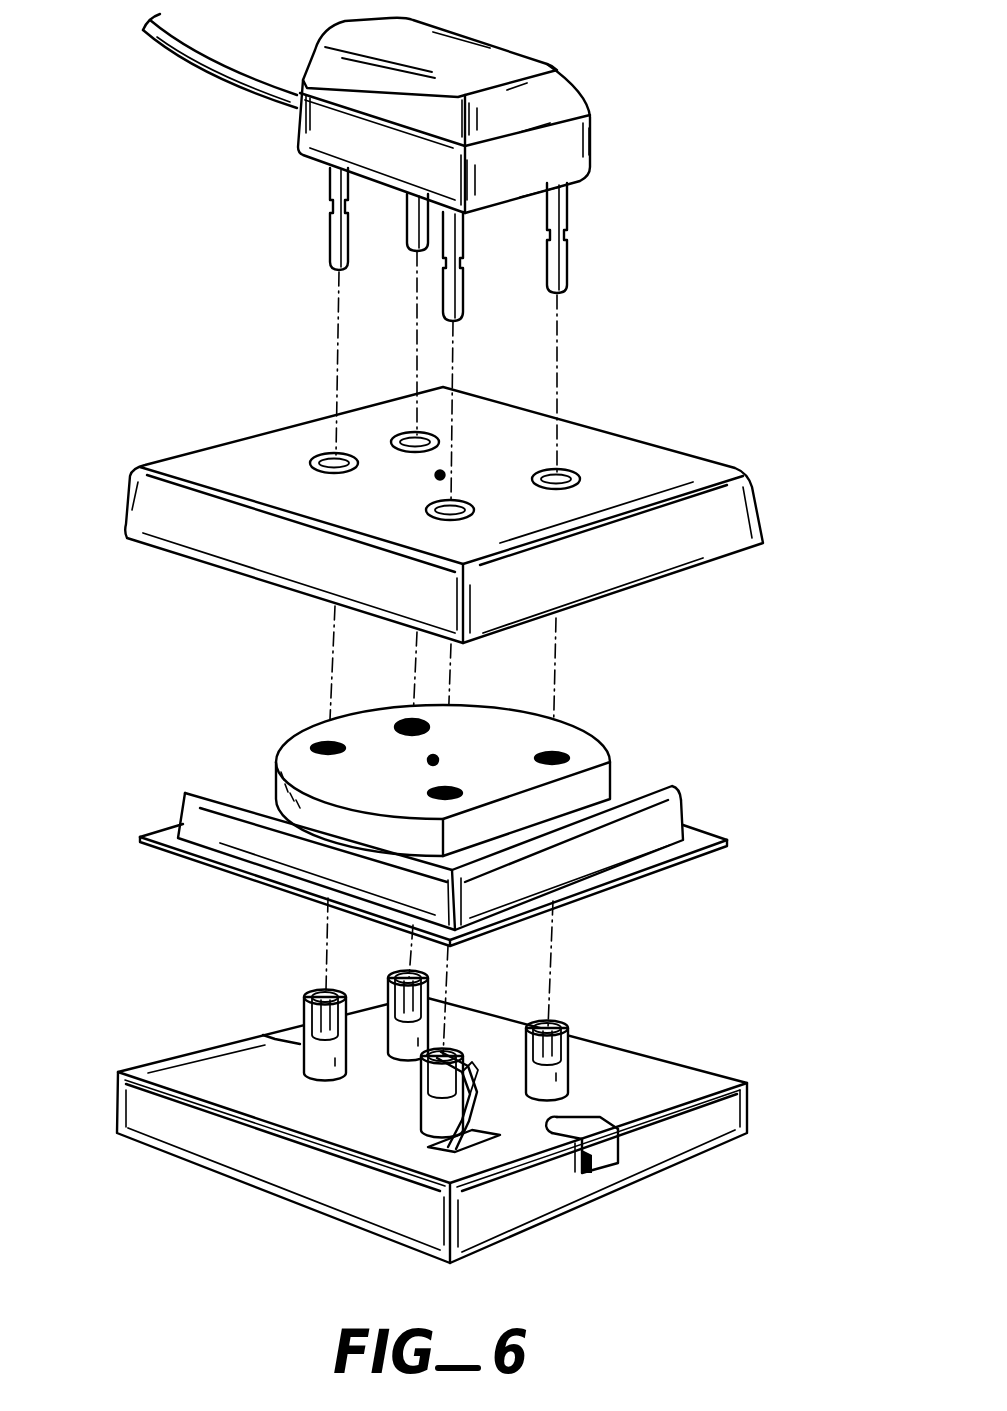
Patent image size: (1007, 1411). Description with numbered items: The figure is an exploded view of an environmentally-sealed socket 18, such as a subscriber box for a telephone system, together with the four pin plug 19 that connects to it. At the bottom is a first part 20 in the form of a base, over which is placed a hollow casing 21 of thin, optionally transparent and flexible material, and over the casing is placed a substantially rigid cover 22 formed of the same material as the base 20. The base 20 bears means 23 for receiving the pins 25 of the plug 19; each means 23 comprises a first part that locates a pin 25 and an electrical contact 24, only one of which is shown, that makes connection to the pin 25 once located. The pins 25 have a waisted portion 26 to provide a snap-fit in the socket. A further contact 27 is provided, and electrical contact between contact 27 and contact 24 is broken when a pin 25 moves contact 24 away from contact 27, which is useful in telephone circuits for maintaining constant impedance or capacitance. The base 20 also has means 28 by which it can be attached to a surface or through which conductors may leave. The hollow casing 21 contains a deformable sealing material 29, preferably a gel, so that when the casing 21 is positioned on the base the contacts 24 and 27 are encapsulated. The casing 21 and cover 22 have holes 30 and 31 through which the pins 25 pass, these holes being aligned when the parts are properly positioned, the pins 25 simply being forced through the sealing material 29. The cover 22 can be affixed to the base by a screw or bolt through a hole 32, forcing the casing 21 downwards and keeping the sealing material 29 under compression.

The environmentally-sealed socket 18 is at (655, 344).
The plug 19 is at (582, 82).
The first part (base) 20 is at (200, 1135).
The hollow casing 21 is at (243, 783).
The cover 22 is at (237, 466).
The means for receiving pins 23 is at (428, 988).
The electrical contact 24 is at (477, 1095).
The pin 25 is at (330, 233).
The waisted portion 26 is at (567, 232).
The further contact 27 is at (435, 1128).
The attachment means 28 is at (623, 1140).
The sealing material 29 is at (263, 877).
The holes in casing 30 is at (430, 728).
The holes in cover 31 is at (436, 440).
The hole for screw or bolt 32 is at (435, 473).